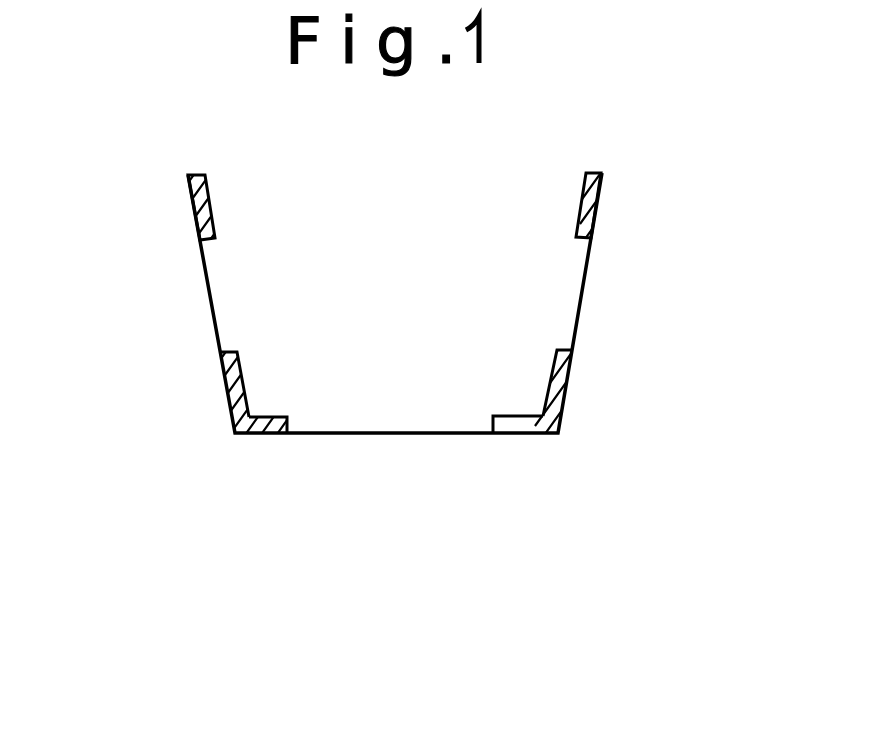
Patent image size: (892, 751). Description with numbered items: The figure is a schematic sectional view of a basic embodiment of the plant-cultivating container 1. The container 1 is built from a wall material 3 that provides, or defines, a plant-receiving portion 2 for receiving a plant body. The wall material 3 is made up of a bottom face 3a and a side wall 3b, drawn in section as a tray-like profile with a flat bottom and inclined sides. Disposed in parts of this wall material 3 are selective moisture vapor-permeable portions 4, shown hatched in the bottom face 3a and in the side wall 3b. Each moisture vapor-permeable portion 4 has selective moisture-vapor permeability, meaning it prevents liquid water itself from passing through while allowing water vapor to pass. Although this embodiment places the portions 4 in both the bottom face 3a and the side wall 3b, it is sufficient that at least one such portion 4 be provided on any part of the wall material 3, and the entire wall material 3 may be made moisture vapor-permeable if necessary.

The plant-cultivating container 1 is at (421, 343).
The plant-receiving portion 2 is at (460, 355).
The wall material 3 is at (479, 433).
The bottom face 3a is at (505, 431).
The side wall 3b is at (550, 414).
The selective moisture vapor-permeable portion 4 is at (408, 343).